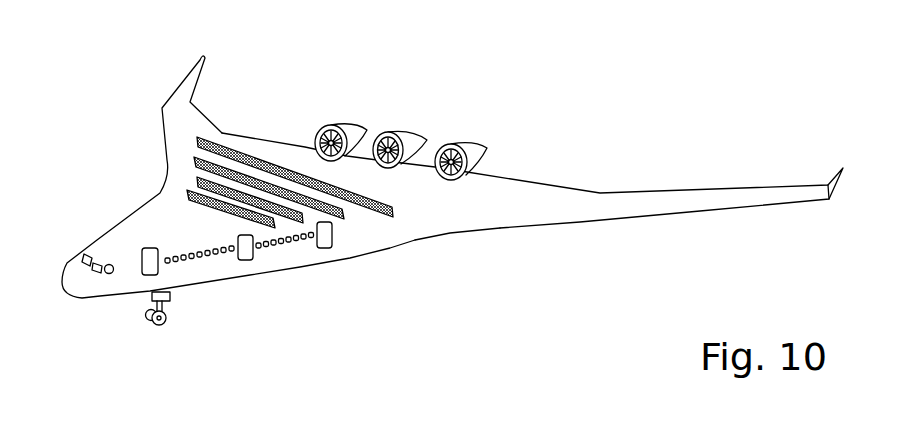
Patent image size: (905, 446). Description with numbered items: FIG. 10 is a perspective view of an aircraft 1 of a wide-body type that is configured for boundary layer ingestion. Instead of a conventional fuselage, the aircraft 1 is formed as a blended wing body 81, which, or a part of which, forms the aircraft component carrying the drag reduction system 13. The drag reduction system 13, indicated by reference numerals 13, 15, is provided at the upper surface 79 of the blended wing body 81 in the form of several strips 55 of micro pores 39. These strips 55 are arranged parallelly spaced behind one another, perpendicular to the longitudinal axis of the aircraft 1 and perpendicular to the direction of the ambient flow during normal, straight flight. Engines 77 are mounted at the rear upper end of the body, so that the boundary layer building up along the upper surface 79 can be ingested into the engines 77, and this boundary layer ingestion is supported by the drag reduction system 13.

The aircraft 1 is at (452, 180).
The drag reduction system 13 is at (532, 229).
The wing upper surface 15 is at (532, 229).
The micro pores 39 is at (290, 142).
The strips 55 is at (212, 162).
The engines 77 is at (442, 143).
The upper surface 79 is at (193, 232).
The blended wing body 81 is at (400, 227).